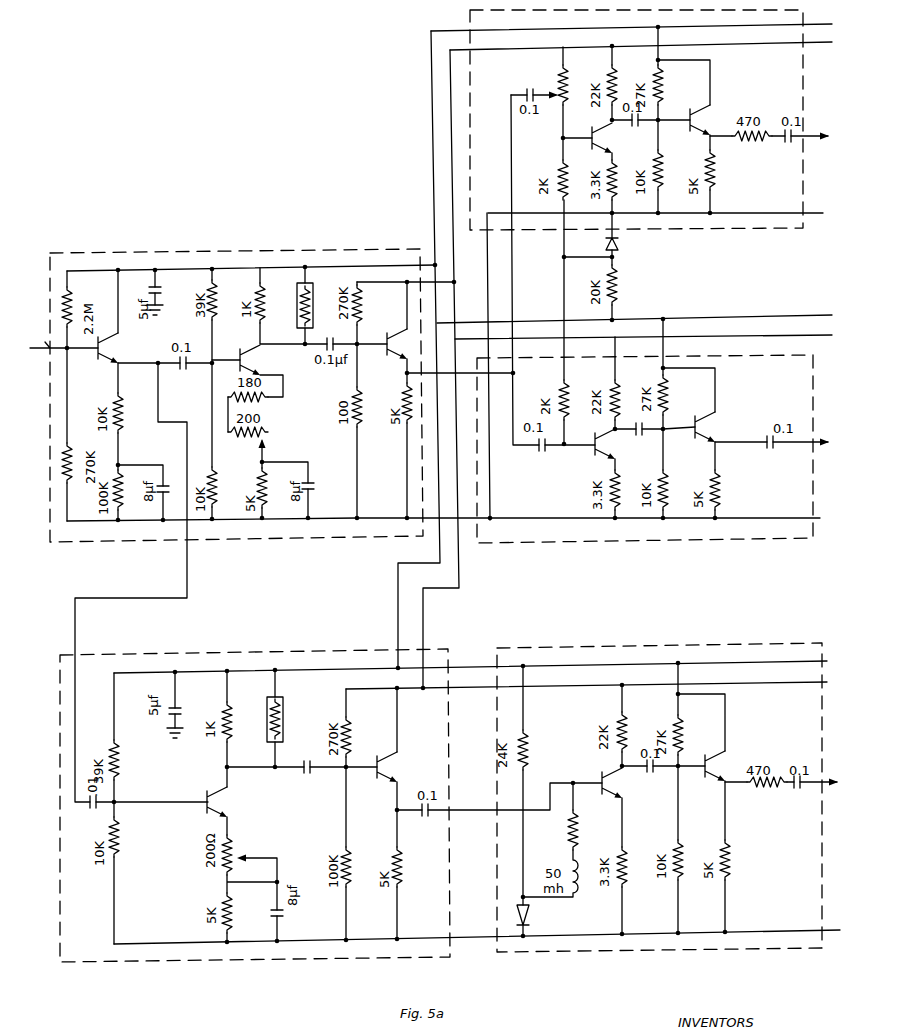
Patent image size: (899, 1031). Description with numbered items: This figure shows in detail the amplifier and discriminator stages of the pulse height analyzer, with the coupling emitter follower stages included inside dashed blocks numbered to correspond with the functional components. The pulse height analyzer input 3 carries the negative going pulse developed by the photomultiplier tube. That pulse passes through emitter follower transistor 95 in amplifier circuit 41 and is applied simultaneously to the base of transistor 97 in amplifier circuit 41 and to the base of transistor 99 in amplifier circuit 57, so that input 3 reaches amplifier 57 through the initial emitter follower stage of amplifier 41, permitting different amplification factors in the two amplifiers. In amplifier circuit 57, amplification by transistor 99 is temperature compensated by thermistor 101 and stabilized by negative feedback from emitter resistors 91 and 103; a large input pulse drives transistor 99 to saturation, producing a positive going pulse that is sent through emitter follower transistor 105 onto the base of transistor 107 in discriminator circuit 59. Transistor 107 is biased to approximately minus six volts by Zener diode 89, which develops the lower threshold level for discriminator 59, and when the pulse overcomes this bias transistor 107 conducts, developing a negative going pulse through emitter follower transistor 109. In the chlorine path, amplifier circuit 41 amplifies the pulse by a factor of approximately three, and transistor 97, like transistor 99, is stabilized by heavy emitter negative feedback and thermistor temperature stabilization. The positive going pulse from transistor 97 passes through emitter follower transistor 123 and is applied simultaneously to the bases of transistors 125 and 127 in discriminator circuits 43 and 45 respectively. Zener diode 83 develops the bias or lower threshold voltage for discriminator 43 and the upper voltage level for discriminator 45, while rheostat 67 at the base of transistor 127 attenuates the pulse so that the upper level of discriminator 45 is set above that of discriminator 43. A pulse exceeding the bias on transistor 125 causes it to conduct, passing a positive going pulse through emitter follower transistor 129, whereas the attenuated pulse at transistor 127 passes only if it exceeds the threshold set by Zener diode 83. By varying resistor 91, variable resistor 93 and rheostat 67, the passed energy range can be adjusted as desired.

The pulse height analyzer input 3 is at (48, 337).
The amplifier 41 is at (208, 251).
The discriminator 43 is at (597, 545).
The discriminator 45 is at (470, 18).
The amplifier 57 is at (257, 652).
The discriminator 59 is at (745, 645).
The rheostat 67 is at (560, 79).
The Zener diode 83 is at (617, 249).
The Zener diode 89 is at (533, 918).
The emitter resistor 91 is at (258, 856).
The variable resistor 93 is at (266, 441).
The emitter follower transistor 95 is at (106, 347).
The transistor 97 is at (246, 363).
The transistor 99 is at (221, 803).
The thermistor 101 is at (283, 702).
The emitter resistor 103 is at (243, 917).
The emitter follower transistor 105 is at (389, 768).
The transistor 107 is at (617, 790).
The emitter follower transistor 109 is at (717, 758).
The emitter follower transistor 123 is at (393, 341).
The transistor 125 is at (604, 447).
The transistor 127 is at (601, 139).
The emitter follower transistor 129 is at (709, 418).